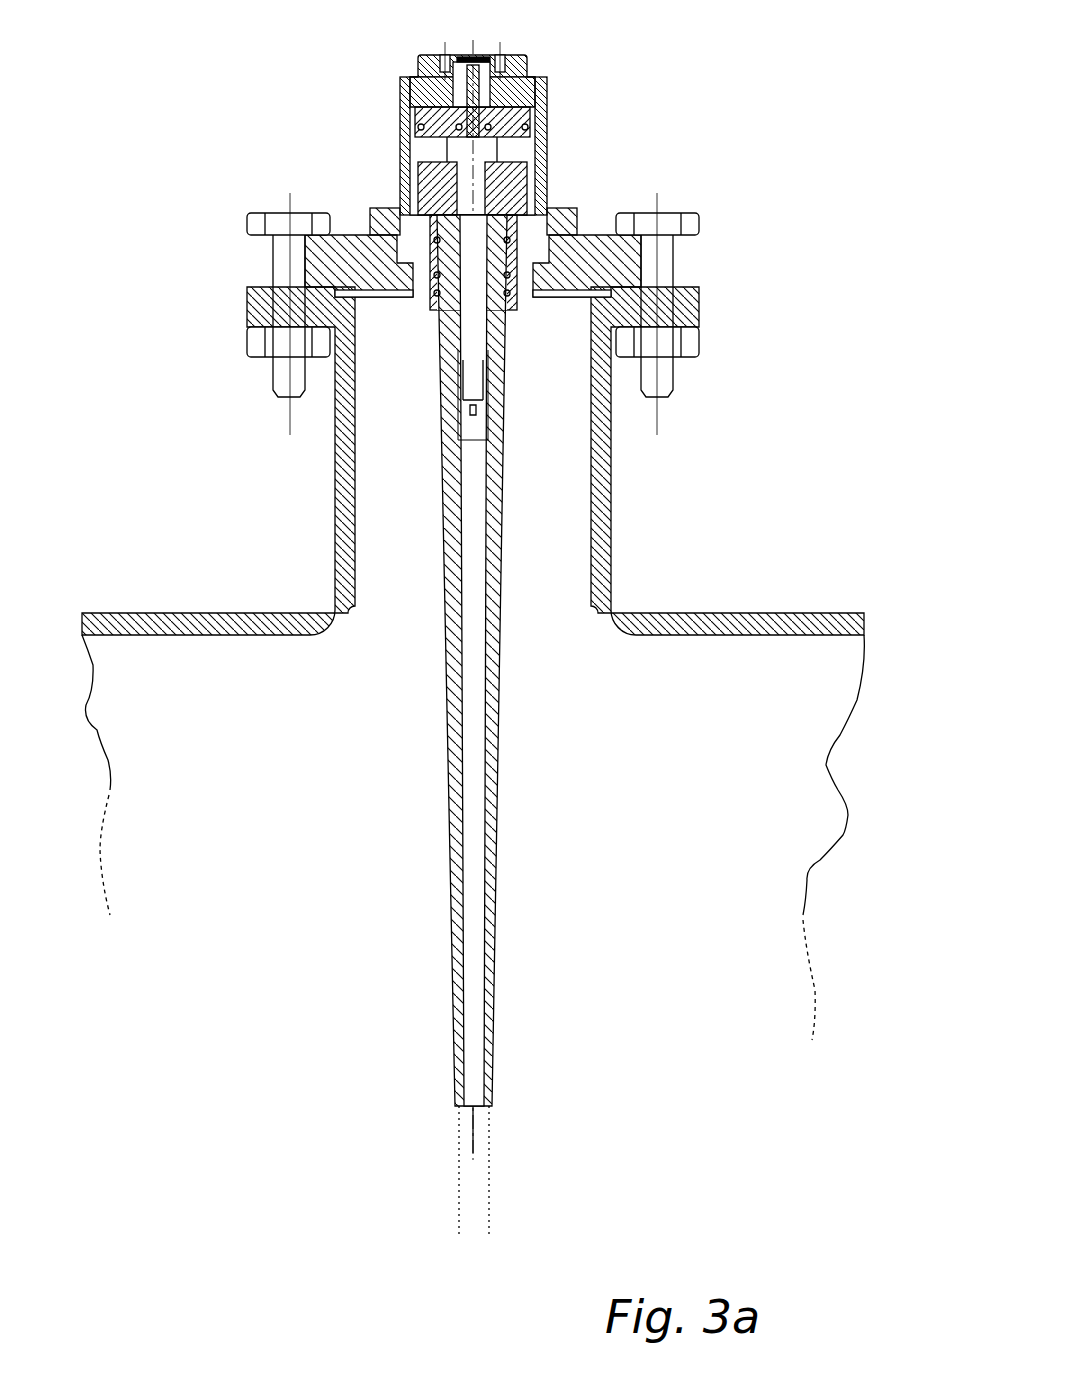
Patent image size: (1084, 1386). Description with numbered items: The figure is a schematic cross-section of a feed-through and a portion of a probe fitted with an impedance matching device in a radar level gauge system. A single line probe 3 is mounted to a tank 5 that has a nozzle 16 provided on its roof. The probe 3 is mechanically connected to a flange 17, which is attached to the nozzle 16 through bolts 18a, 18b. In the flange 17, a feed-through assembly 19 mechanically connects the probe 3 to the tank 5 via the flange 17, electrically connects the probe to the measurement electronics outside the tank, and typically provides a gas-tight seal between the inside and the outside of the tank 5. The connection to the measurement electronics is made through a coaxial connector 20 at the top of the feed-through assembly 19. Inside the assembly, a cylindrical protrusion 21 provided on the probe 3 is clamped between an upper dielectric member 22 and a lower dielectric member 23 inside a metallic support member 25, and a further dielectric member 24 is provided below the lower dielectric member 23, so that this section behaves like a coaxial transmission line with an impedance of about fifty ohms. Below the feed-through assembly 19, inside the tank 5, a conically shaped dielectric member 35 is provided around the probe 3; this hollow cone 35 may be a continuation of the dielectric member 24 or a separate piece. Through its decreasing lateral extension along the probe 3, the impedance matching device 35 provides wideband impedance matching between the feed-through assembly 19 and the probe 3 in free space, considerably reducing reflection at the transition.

The single line probe 3 is at (492, 1040).
The tank 5 is at (838, 576).
The nozzle 16 is at (612, 458).
The flange 17 is at (590, 232).
The bolt 18a is at (262, 220).
The bolt 18b is at (688, 216).
The feed-through assembly 19 is at (484, 580).
The coaxial connector 20 is at (470, 56).
The cylindrical protrusion 21 is at (455, 150).
The upper dielectric member 22 is at (425, 113).
The lower dielectric member 23 is at (428, 190).
The further dielectric member 24 is at (500, 258).
The metallic support member 25 is at (548, 232).
The conically shaped dielectric member 35 is at (509, 726).